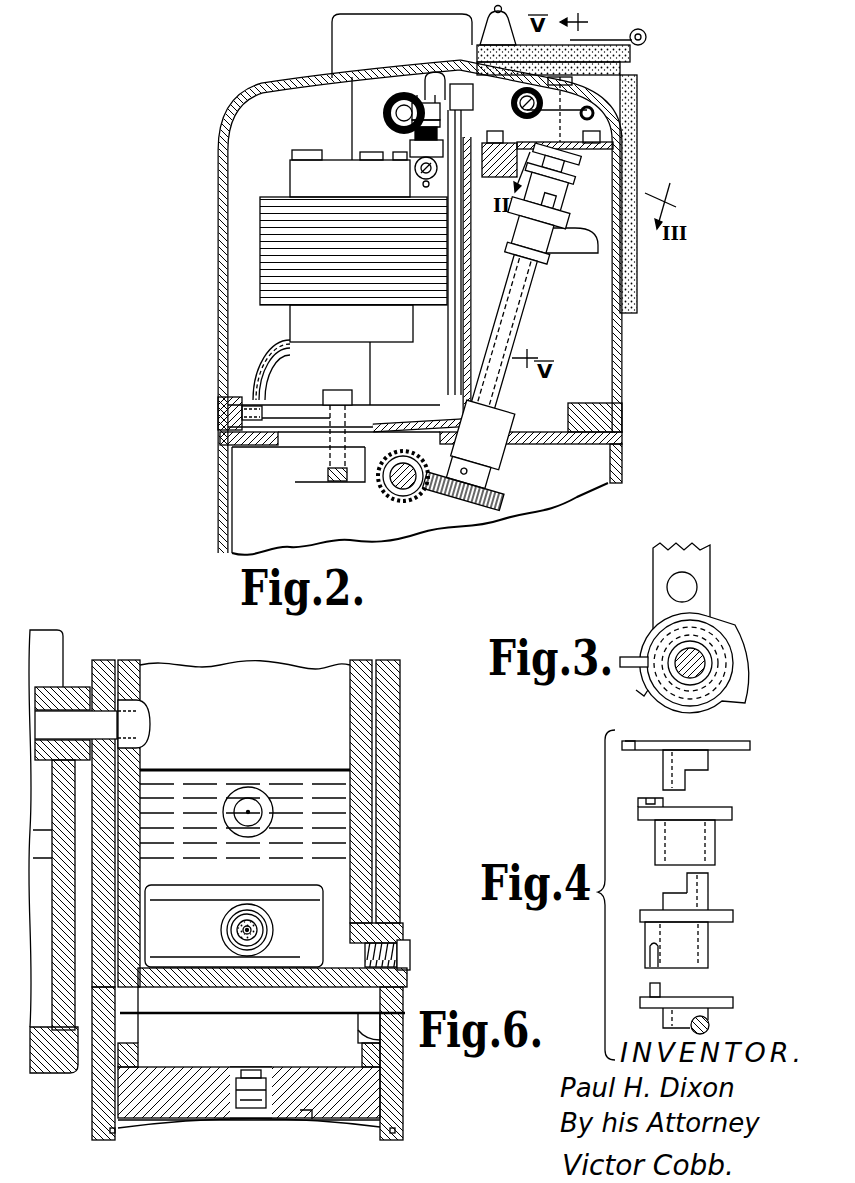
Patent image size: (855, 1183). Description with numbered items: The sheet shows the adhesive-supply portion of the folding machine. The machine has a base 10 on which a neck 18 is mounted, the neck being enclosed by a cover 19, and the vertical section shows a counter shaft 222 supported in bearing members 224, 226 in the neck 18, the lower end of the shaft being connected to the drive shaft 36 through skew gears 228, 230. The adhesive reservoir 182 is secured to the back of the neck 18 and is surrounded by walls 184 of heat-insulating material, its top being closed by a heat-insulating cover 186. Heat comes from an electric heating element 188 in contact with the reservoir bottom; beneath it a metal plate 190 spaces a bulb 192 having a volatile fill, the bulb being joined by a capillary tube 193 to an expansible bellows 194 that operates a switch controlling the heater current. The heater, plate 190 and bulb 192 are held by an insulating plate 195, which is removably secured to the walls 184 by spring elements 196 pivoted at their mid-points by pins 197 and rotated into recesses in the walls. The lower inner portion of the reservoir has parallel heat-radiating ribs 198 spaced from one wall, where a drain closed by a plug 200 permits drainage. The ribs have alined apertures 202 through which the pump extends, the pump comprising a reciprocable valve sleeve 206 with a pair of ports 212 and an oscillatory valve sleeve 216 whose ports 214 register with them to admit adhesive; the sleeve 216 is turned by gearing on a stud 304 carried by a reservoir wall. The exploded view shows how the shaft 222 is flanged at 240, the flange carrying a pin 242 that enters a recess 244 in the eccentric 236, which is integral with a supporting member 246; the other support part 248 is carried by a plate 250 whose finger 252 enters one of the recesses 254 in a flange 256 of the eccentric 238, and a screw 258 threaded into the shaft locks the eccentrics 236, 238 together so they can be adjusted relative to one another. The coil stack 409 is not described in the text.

In FIG. 2, the base 10 is at (220, 483).
In FIG. 2, the neck 18 is at (464, 297).
In FIG. 6, the neck 18 is at (75, 687).
In FIG. 2, the cover 19 is at (217, 270).
In FIG. 2, the drive shaft 36 is at (401, 498).
In FIG. 6, the adhesive reservoir 182 is at (130, 665).
In FIG. 2, the walls 184 is at (637, 127).
In FIG. 6, the walls 184 is at (406, 997).
In FIG. 2, the cover 186 is at (513, 28).
In FIG. 6, the electric heating element 188 is at (203, 1009).
In FIG. 6, the metal plate 190 is at (380, 1035).
In FIG. 6, the bulb 192 is at (345, 1056).
In FIG. 2, the capillary tube 193 is at (453, 84).
In FIG. 2, the expansible bellows 194 is at (392, 126).
In FIG. 6, the plate 195 is at (308, 1112).
In FIG. 6, the spring elements 196 is at (128, 1125).
In FIG. 6, the pins 197 is at (247, 1125).
In FIG. 6, the heat-radiating ribs 198 is at (307, 888).
In FIG. 6, the plug 200 is at (411, 949).
In FIG. 6, the alined apertures 202 is at (263, 920).
In FIG. 6, the reciprocable valve sleeve 206 is at (233, 926).
In FIG. 6, the ports 212 is at (250, 912).
In FIG. 6, the ports 214 is at (240, 938).
In FIG. 6, the oscillatory valve sleeve 216 is at (260, 937).
In FIG. 2, the counter shaft 222 is at (522, 326).
In FIG. 4, the counter shaft 222 is at (712, 1017).
In FIG. 2, the bearing member 224 is at (505, 455).
In FIG. 2, the bearing member 226 is at (552, 272).
In FIG. 3, the bearing member 226 is at (708, 558).
In FIG. 2, the skew gear 228 is at (463, 497).
In FIG. 2, the skew gear 230 is at (385, 494).
In FIG. 2, the eccentric 236 is at (560, 224).
In FIG. 4, the eccentric 236 is at (712, 945).
In FIG. 2, the eccentric 238 is at (575, 195).
In FIG. 4, the eccentric 238 is at (714, 842).
In FIG. 4, the flange 240 is at (732, 997).
In FIG. 4, the pin 242 is at (661, 990).
In FIG. 4, the recess 244 is at (652, 950).
In FIG. 4, the supporting member 246 is at (708, 888).
In FIG. 4, the support member 248 is at (706, 762).
In FIG. 3, the plate 250 is at (745, 695).
In FIG. 4, the plate 250 is at (752, 745).
In FIG. 3, the finger 252 is at (628, 652).
In FIG. 4, the finger 252 is at (633, 745).
In FIG. 3, the recesses 254 is at (640, 693).
In FIG. 4, the recesses 254 is at (640, 822).
In FIG. 4, the flange 256 is at (730, 810).
In FIG. 2, the screw 258 is at (575, 170).
In FIG. 3, the screw 258 is at (700, 663).
In FIG. 6, the stud 304 is at (247, 800).
In FIG. 2, the coil stack 409 is at (276, 197).